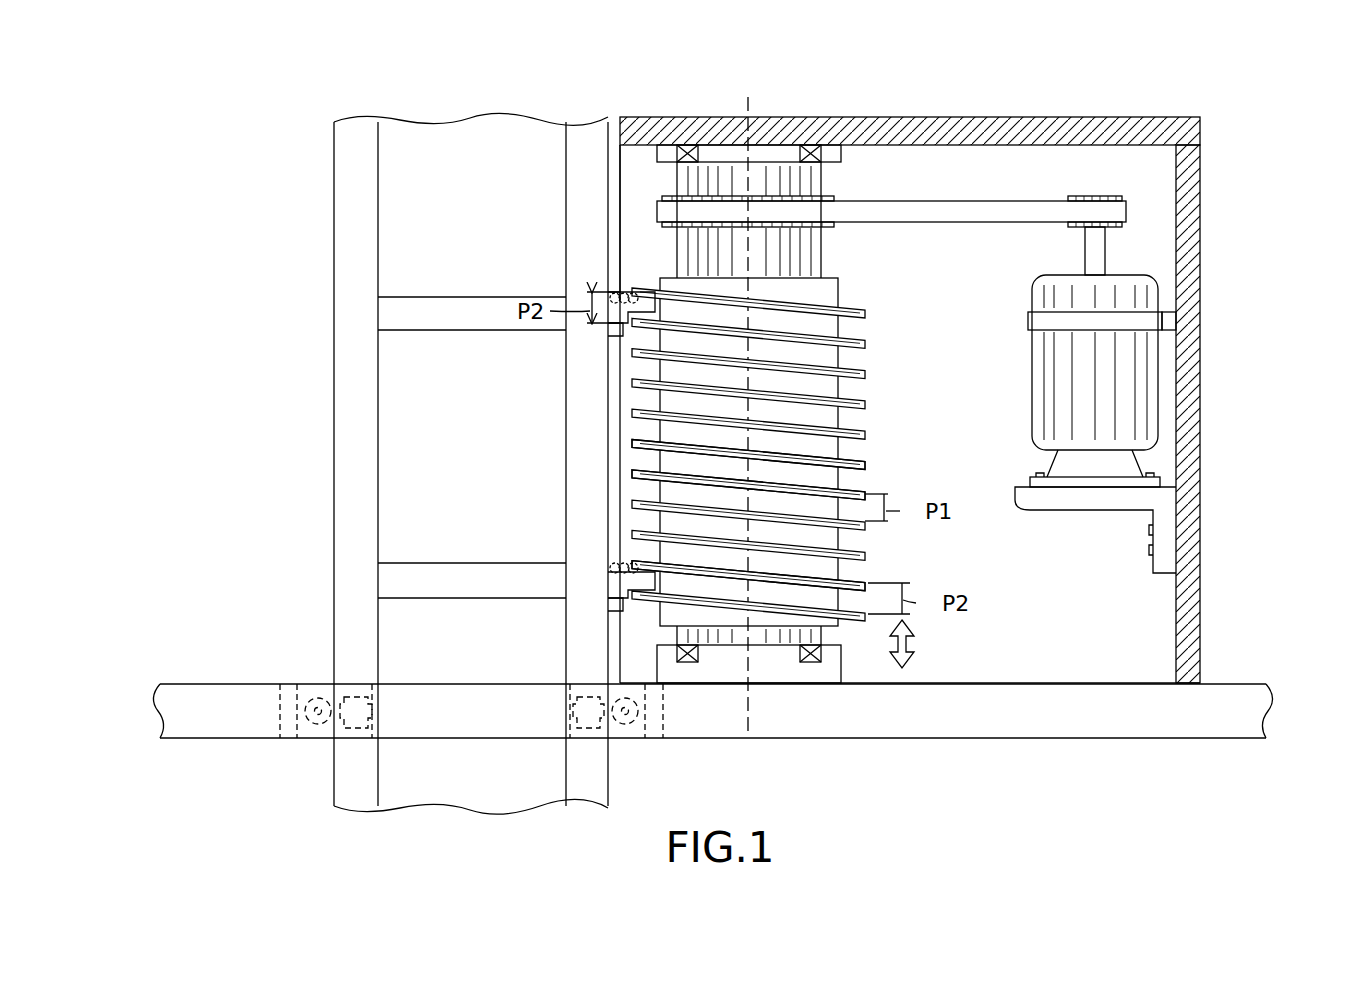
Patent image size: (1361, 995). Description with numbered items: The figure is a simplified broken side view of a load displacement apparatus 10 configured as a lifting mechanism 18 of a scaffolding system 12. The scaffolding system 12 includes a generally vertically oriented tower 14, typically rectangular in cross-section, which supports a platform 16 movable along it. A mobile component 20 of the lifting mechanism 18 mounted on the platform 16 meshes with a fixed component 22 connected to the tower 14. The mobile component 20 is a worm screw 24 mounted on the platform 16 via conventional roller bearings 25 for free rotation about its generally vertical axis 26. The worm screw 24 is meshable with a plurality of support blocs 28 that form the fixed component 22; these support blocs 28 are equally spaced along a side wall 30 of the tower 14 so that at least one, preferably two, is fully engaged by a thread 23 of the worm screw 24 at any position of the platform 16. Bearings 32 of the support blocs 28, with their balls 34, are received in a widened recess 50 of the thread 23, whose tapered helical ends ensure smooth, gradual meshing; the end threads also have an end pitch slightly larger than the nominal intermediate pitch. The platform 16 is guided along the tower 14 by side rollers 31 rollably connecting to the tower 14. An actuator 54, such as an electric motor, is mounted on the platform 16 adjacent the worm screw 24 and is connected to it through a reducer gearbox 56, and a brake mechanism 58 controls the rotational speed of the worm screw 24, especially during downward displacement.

The load displacement apparatus 10 is at (671, 107).
The scaffolding system 12 is at (1223, 132).
The tower 14 is at (335, 272).
The platform 16 is at (232, 683).
The lifting mechanism 18 is at (996, 588).
The mobile component 20 is at (871, 486).
The fixed component 22 is at (626, 621).
The thread 23 is at (856, 432).
The worm screw 24 is at (830, 568).
The roller bearings 25 is at (690, 148).
The vertical axis 26 is at (833, 296).
The support blocs 28 is at (610, 326).
The side wall 30 is at (620, 190).
The side rollers 31 is at (345, 733).
The bearings 32 is at (636, 333).
The balls 34 is at (630, 294).
The recess 50 is at (858, 352).
The actuator 54 is at (1032, 392).
The reducer gearbox 56 is at (945, 232).
The brake mechanism 58 is at (832, 200).